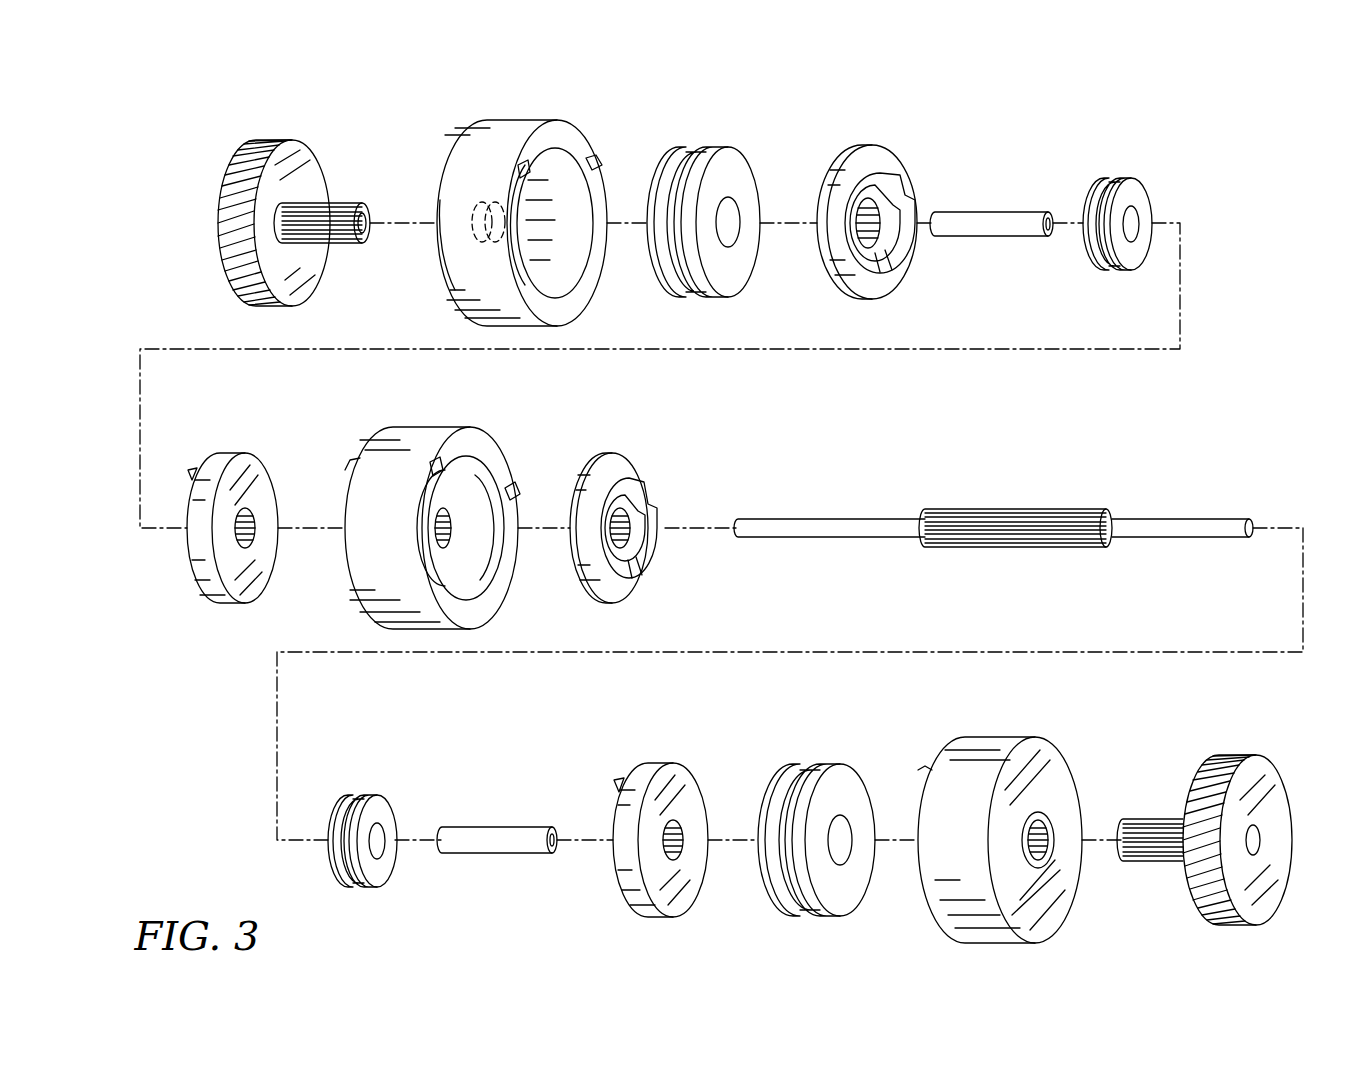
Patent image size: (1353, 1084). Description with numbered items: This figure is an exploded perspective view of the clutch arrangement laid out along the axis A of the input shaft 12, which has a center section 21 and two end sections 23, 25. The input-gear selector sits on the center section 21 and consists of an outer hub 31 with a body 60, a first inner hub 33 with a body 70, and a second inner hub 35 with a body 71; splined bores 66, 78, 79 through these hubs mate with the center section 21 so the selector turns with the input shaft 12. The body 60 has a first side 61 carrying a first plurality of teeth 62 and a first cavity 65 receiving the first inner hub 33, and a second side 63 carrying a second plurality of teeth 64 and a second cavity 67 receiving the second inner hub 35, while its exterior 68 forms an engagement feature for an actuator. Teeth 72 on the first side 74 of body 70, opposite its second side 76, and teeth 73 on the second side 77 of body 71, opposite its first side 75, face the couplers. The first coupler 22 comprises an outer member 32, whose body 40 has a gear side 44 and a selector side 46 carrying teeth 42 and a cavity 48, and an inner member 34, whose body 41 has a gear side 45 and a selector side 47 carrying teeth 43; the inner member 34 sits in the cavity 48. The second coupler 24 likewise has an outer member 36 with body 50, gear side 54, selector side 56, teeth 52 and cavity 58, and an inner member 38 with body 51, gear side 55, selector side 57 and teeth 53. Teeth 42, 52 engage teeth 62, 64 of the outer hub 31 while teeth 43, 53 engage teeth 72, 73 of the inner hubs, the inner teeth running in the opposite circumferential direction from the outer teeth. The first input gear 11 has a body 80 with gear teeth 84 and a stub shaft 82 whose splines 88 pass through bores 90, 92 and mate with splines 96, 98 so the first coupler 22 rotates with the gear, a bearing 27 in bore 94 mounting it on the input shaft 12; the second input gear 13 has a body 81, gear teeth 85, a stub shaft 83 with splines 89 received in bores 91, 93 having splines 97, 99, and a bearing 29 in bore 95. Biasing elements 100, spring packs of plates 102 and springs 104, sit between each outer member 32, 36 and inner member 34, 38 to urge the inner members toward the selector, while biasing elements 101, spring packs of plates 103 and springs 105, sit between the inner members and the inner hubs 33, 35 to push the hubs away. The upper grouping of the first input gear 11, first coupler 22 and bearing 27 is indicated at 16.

The first input gear 11 is at (268, 216).
The input shaft 12 is at (1020, 466).
The second input gear 13 is at (1227, 796).
The pulley assembly 16 is at (829, 473).
The center section 21 is at (1038, 500).
The first coupler 22 is at (502, 191).
The end section 23 is at (826, 505).
The second coupler 24 is at (638, 811).
The end section 25 is at (1205, 505).
The bearing 27 is at (1008, 210).
The bearing 29 is at (511, 820).
The outer hub 31 is at (426, 497).
The outer member 32 is at (491, 123).
The first inner hub 33 is at (255, 490).
The inner member 34 is at (876, 193).
The second inner hub 35 is at (637, 501).
The outer member 36 is at (999, 808).
The inner member 38 is at (648, 760).
The body 40 is at (513, 133).
The body 41 is at (878, 143).
The teeth 42 is at (605, 178).
The teeth 43 is at (917, 172).
The gear side 44 is at (440, 255).
The gear side 45 is at (830, 275).
The selector side 46 is at (582, 305).
The selector side 47 is at (900, 260).
The cavity 48 is at (567, 250).
The body 50 is at (980, 780).
The body 51 is at (666, 760).
The teeth 52 is at (915, 785).
The teeth 53 is at (617, 778).
The gear side 54 is at (1055, 920).
The gear side 55 is at (680, 905).
The selector side 56 is at (922, 895).
The selector side 57 is at (614, 870).
The cavity 58 is at (950, 805).
The body 60 is at (408, 430).
The first side 61 is at (352, 588).
The first plurality of teeth 62 is at (345, 467).
The second side 63 is at (500, 596).
The second plurality of teeth 64 is at (521, 480).
The first cavity 65 is at (368, 520).
The bore 66 is at (472, 540).
The second cavity 67 is at (490, 516).
The exterior 68 is at (378, 455).
The body 70 is at (239, 450).
The body 71 is at (626, 445).
The teeth 72 is at (189, 468).
The teeth 73 is at (672, 470).
The first side 74 is at (193, 545).
The first side 75 is at (580, 592).
The second side 76 is at (262, 578).
The second side 77 is at (655, 566).
The bore 78 is at (272, 536).
The bore 79 is at (641, 536).
The body 80 is at (302, 170).
The body 81 is at (1263, 815).
The stub shaft 82 is at (334, 186).
The stub shaft 83 is at (1153, 810).
The gear teeth 84 is at (272, 318).
The gear teeth 85 is at (1220, 765).
The splines 88 is at (331, 245).
The splines 89 is at (1168, 865).
The bore 90 is at (489, 192).
The bore 91 is at (1057, 822).
The bore 92 is at (886, 230).
The bore 93 is at (692, 823).
The bore 94 is at (372, 215).
The bore 95 is at (1263, 838).
The splines 96 is at (463, 148).
The splines 97 is at (1052, 850).
The splines 98 is at (866, 228).
The splines 99 is at (681, 851).
The biasing elements 100 is at (761, 486).
The biasing elements 101 is at (1121, 155).
The plates 102 is at (672, 152).
The plates 103 is at (1099, 190).
The springs 104 is at (727, 185).
The springs 105 is at (1137, 195).
The axis A is at (1280, 527).